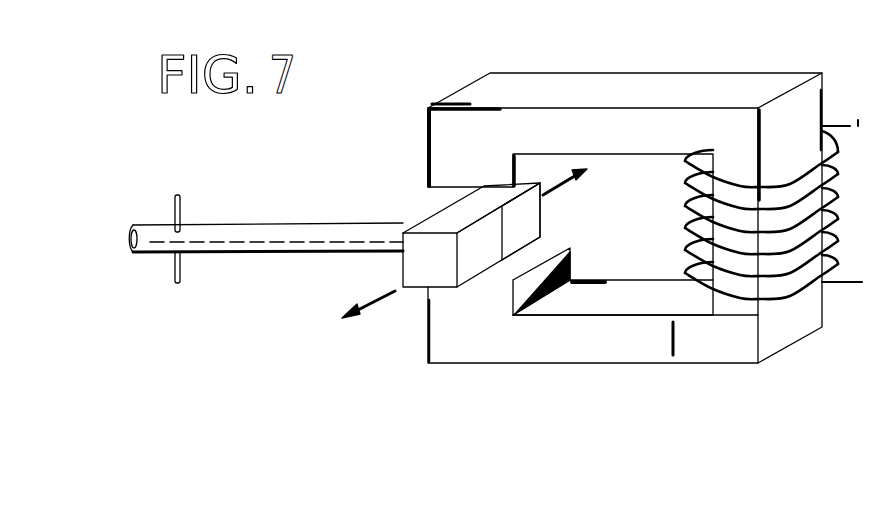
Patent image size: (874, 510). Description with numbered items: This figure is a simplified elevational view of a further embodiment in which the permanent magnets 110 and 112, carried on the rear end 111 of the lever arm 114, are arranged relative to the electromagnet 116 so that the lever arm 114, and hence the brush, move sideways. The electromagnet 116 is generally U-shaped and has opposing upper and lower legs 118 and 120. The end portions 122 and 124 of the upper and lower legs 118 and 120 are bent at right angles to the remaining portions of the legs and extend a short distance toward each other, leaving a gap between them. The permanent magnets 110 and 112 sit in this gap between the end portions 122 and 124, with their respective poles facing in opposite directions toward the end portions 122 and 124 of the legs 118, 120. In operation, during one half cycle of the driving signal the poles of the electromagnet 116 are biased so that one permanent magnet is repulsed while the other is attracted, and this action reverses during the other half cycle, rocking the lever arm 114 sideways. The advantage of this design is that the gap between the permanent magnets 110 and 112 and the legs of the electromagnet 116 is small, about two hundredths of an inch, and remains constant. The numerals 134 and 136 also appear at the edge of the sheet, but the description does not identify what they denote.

The permanent magnet 110 is at (459, 233).
The rear end of lever arm 111 is at (412, 222).
The permanent magnet 112 is at (541, 218).
The lever arm 114 is at (266, 253).
The electromagnet 116 is at (619, 68).
The upper leg 118 is at (655, 148).
The lower leg 120 is at (641, 288).
The end portion of upper leg 122 is at (428, 158).
The end portion of lower leg 124 is at (571, 250).
The reference numeral of adjacent figure 134 is at (609, 509).
The reference numeral of adjacent figure 136 is at (702, 505).